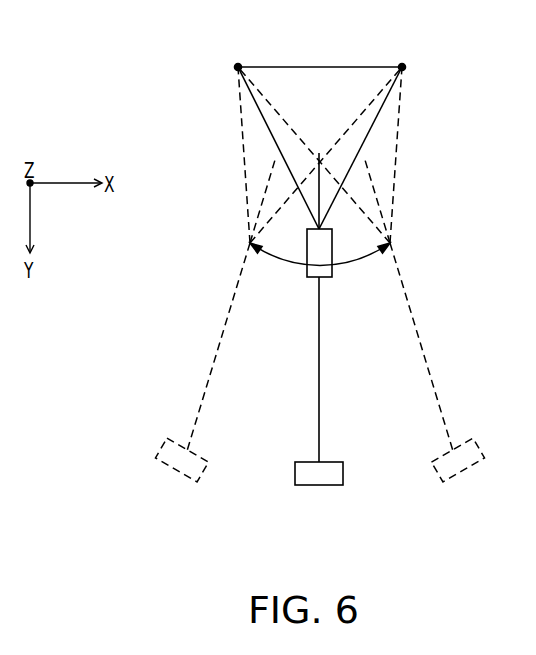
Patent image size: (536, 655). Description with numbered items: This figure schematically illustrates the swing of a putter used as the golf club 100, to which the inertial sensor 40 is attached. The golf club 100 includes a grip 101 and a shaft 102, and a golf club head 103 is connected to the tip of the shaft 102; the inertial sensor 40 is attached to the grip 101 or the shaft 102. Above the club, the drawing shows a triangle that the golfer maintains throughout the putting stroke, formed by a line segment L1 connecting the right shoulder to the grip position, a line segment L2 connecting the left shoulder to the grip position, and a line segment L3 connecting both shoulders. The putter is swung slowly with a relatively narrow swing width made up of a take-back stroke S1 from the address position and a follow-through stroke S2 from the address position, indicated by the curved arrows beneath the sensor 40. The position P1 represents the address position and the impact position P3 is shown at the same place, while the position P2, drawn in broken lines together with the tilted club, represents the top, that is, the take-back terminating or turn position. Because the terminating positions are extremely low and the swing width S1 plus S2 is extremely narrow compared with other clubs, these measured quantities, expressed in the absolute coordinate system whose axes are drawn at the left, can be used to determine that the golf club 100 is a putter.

The golf club 100 is at (300, 417).
The grip 101 is at (320, 190).
The shaft 102 is at (319, 373).
The golf club head 103 is at (317, 487).
The inertial sensor 40 is at (332, 246).
The line segment L1 is at (264, 119).
The line segment L2 is at (377, 118).
The line segment L3 is at (317, 65).
The take-back stroke S1 is at (285, 268).
The follow-through stroke S2 is at (355, 268).
The address position P1 is at (327, 506).
The top position P2 is at (273, 281).
The impact position P3 is at (362, 283).